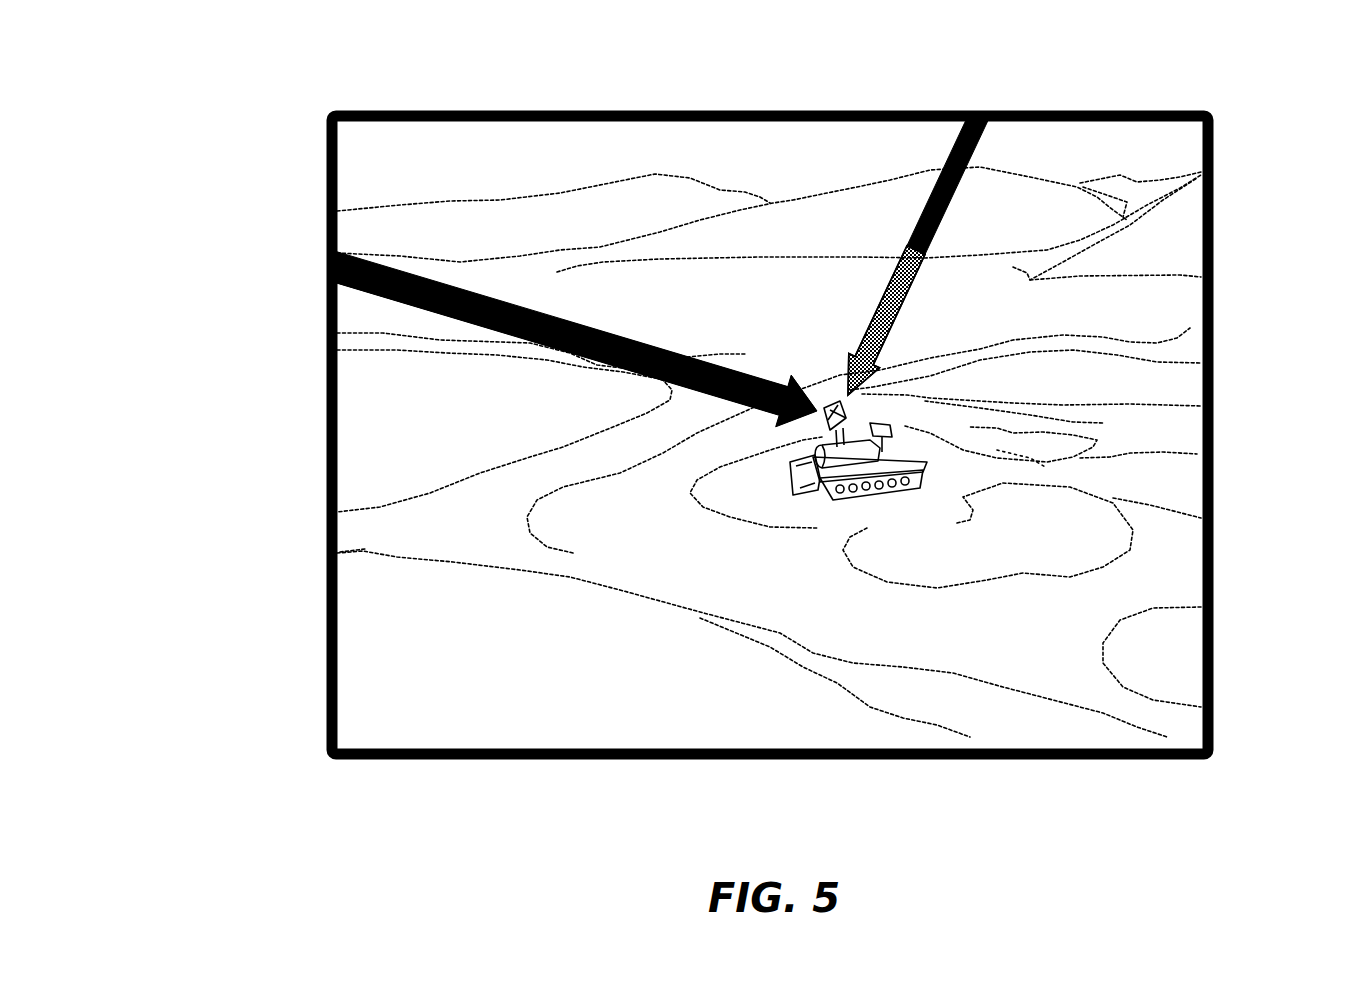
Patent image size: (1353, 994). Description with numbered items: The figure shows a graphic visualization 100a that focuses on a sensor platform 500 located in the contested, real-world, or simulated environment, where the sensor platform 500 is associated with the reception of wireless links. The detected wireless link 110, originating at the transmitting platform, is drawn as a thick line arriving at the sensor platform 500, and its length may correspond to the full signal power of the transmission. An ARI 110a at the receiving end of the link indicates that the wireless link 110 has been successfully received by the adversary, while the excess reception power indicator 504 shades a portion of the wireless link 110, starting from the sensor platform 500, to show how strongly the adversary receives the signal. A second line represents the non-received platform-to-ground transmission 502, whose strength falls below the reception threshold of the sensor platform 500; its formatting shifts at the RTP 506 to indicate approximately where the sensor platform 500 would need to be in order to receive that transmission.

The graphic visualization 100a is at (158, 108).
The wireless link 110 is at (479, 296).
The ARI 110a is at (423, 306).
The excess reception power indicator 504 is at (638, 373).
The non-received platform-to-ground transmission 502 is at (942, 185).
The RTP 506 is at (907, 238).
The sensor platform 500 is at (848, 469).